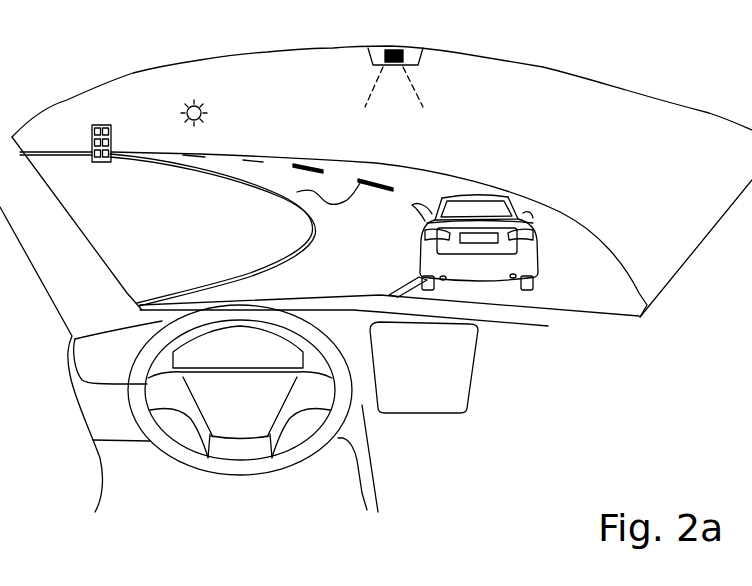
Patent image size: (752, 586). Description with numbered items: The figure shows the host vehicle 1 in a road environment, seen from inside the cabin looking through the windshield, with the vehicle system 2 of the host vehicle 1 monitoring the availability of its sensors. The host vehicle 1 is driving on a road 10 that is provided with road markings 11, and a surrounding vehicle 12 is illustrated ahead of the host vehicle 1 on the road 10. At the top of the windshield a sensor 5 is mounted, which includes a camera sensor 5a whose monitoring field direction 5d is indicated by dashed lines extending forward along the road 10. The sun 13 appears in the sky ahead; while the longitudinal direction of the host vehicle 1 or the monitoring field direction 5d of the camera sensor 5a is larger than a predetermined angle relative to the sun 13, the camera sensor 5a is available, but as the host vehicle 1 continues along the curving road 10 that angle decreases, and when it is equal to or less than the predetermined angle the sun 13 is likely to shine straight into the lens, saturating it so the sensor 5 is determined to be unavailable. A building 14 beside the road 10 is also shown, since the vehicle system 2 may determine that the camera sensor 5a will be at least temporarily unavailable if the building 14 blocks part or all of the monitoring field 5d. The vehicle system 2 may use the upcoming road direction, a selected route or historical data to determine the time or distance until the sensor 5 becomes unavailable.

The host vehicle 1 is at (652, 389).
The vehicle system 2 is at (628, 422).
The sensor 5 is at (432, 58).
The camera sensor 5a is at (367, 56).
The monitoring field direction 5d is at (371, 94).
The road 10 is at (208, 274).
The road markings 11 is at (297, 192).
The surrounding vehicle 12 is at (600, 191).
The sun 13 is at (192, 86).
The building 14 is at (97, 170).